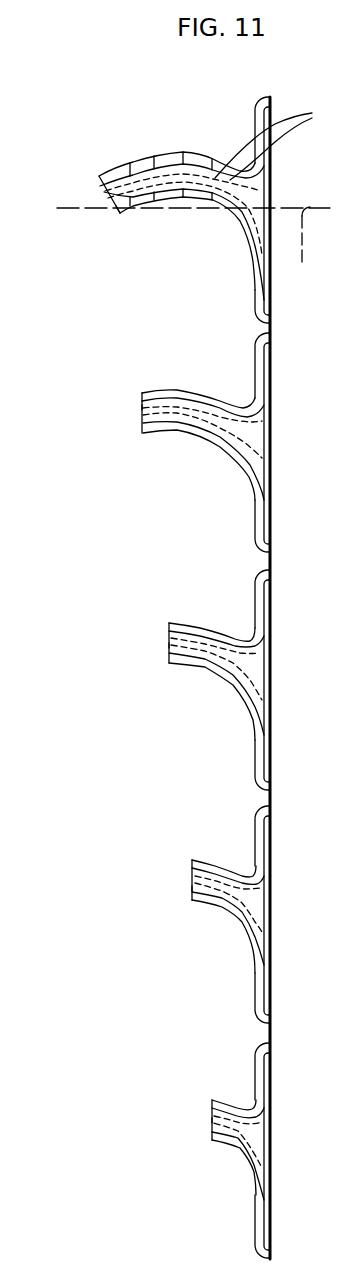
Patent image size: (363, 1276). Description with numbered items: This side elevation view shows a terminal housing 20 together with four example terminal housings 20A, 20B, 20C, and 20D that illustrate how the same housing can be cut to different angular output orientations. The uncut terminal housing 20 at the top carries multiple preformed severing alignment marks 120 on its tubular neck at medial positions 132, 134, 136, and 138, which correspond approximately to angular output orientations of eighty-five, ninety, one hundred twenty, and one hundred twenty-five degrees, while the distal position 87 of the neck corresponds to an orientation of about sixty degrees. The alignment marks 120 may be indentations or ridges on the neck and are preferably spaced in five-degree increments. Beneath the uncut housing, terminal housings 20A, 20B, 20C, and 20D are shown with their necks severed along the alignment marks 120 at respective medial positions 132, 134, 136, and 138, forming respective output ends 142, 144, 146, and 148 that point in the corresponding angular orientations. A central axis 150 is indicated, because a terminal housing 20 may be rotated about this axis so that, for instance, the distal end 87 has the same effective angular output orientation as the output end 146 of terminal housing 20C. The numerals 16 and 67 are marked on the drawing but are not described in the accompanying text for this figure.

The mounting plate 16 is at (264, 558).
The terminal housing 20 is at (102, 170).
The terminal housing 20A is at (161, 382).
The terminal housing 20B is at (179, 621).
The terminal housing 20C is at (206, 861).
The terminal housing 20D is at (219, 1099).
The wall 67 is at (272, 185).
The distal position 87 is at (118, 204).
The severing alignment marks 120 is at (126, 165).
The medial position 132 is at (130, 152).
The medial position 134 is at (154, 143).
The medial position 136 is at (183, 150).
The medial position 138 is at (212, 152).
The output end 142 is at (142, 407).
The output end 144 is at (169, 645).
The output end 146 is at (192, 888).
The output end 148 is at (212, 1120).
The central axis 150 is at (193, 249).